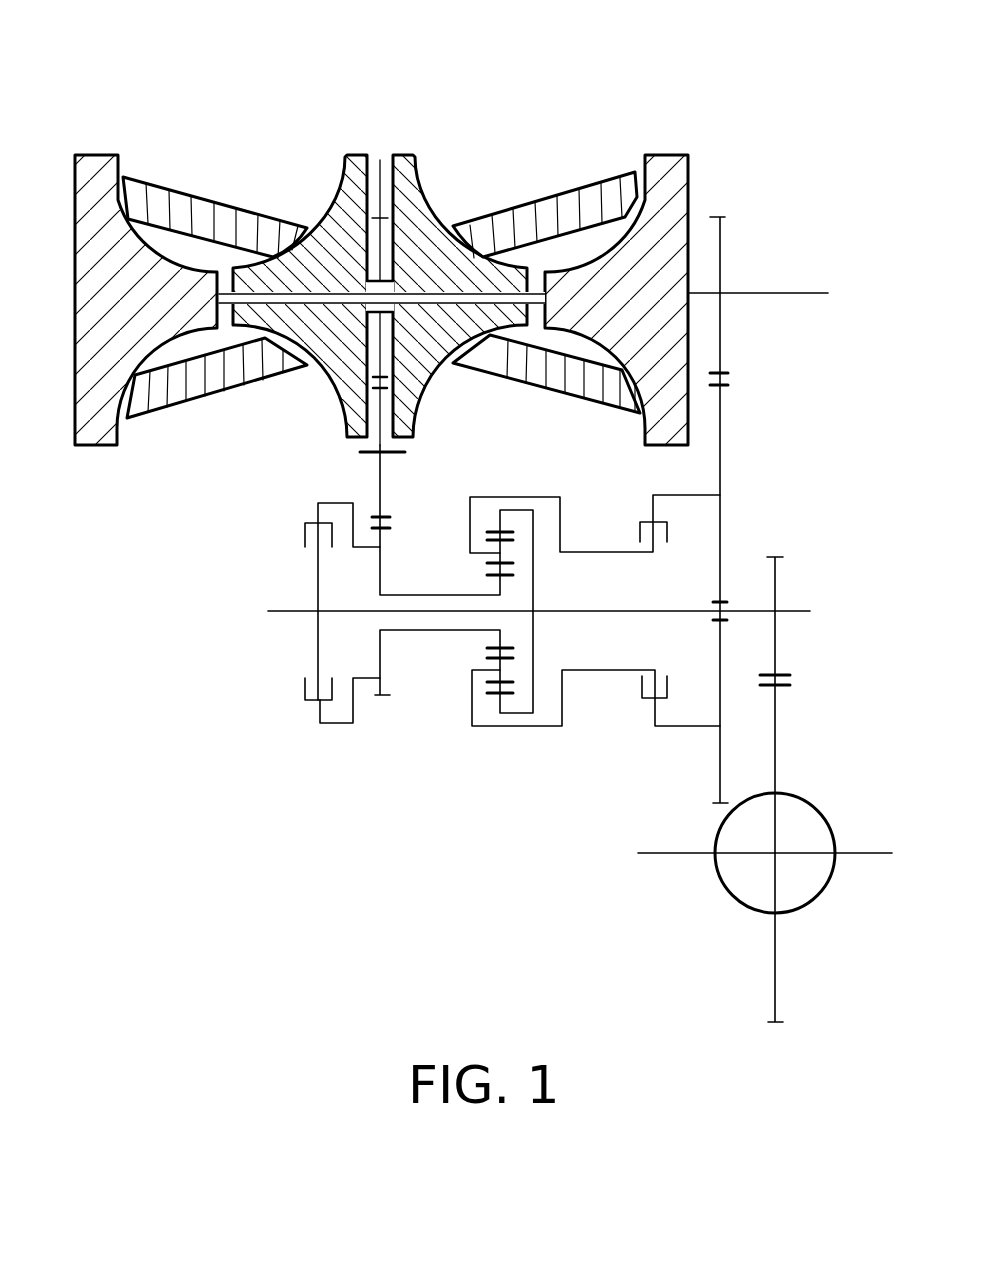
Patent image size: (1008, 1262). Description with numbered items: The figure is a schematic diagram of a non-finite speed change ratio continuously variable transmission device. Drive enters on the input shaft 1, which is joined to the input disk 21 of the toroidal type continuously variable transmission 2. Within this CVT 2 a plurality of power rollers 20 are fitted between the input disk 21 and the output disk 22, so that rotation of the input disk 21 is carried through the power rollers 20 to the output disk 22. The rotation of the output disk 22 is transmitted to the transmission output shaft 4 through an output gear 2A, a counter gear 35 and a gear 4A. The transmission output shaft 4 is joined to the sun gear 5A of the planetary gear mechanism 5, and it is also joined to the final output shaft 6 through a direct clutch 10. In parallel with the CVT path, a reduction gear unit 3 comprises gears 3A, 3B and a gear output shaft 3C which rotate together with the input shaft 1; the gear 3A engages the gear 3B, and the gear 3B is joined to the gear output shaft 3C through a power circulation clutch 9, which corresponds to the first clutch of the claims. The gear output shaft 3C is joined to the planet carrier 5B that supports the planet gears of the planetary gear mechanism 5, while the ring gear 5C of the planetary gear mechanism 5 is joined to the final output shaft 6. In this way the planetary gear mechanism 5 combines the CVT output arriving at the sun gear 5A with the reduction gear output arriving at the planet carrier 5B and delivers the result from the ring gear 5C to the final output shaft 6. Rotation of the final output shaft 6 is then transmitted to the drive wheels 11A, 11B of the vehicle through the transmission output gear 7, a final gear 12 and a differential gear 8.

The input shaft 1 is at (775, 293).
The toroidal type continuously variable transmission 2 is at (459, 114).
The output gear 2A is at (384, 214).
The reduction gear unit 3 is at (817, 343).
The gear 3A is at (718, 364).
The gear 3B is at (718, 440).
The gear output shaft 3C is at (602, 552).
The transmission output shaft 4 is at (445, 595).
The gear 4A is at (383, 529).
The planetary gear mechanism 5 is at (510, 753).
The sun gear 5A is at (500, 647).
The planet carrier 5B is at (473, 682).
The ring gear 5C is at (493, 697).
The final output shaft 6 is at (740, 609).
The transmission output gear 7 is at (782, 673).
The differential gear 8 is at (810, 805).
The power circulation clutch 9 is at (642, 701).
The direct clutch 10 is at (305, 690).
The drive wheel 11A is at (847, 857).
The drive wheel 11B is at (657, 858).
The final gear 12 is at (790, 686).
The power rollers 20 is at (160, 190).
The input disk 21 is at (95, 156).
The output disk 22 is at (345, 165).
The counter gear 35 is at (402, 450).